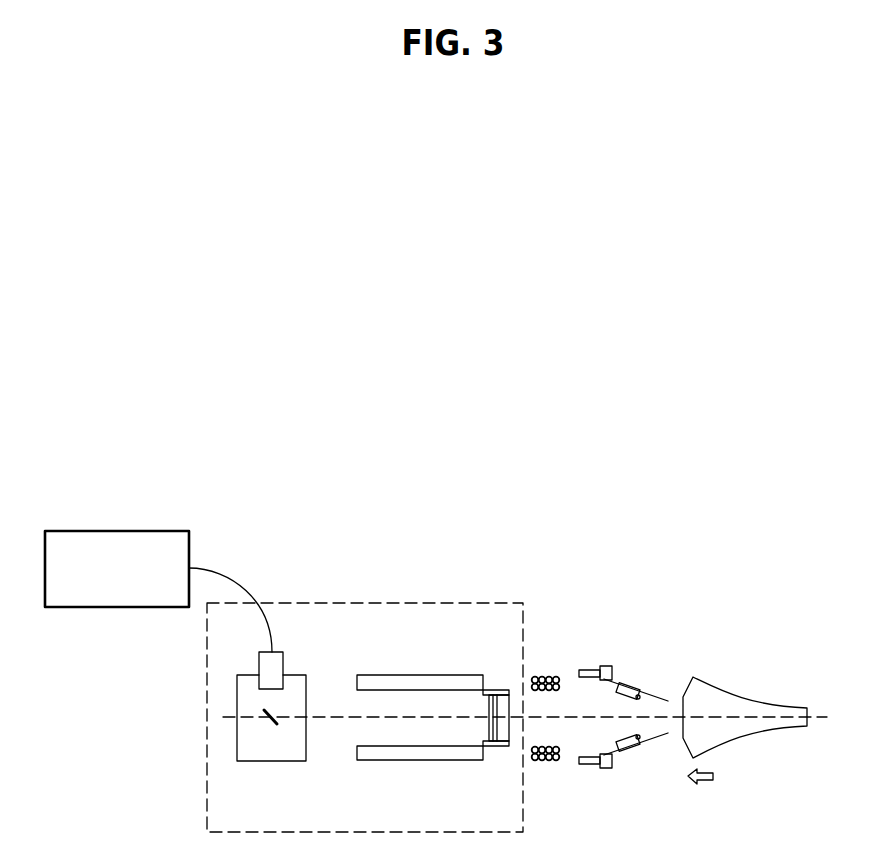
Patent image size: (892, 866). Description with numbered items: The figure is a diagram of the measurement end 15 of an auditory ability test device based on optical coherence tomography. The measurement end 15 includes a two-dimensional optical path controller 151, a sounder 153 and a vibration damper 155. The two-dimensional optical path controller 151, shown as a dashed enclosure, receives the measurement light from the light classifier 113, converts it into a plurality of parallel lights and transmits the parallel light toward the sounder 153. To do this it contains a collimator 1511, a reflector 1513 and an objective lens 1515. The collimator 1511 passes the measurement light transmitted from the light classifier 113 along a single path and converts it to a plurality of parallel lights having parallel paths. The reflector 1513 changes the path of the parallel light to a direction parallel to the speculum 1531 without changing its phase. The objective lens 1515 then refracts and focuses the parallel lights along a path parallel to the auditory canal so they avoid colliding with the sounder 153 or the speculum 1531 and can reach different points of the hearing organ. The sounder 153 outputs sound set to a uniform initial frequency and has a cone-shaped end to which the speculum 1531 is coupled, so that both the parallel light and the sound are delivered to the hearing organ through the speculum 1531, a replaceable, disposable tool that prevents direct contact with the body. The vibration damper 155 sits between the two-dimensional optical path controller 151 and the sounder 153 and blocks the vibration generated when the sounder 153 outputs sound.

The measurement end 15 is at (747, 527).
The light classifier 113 is at (118, 531).
The 2D optical path controller 151 is at (375, 603).
The collimator 1511 is at (277, 660).
The reflector 1513 is at (277, 724).
The objective lens 1515 is at (503, 732).
The sounder 153 is at (635, 688).
The speculum 1531 is at (737, 707).
The vibration damper 155 is at (548, 676).